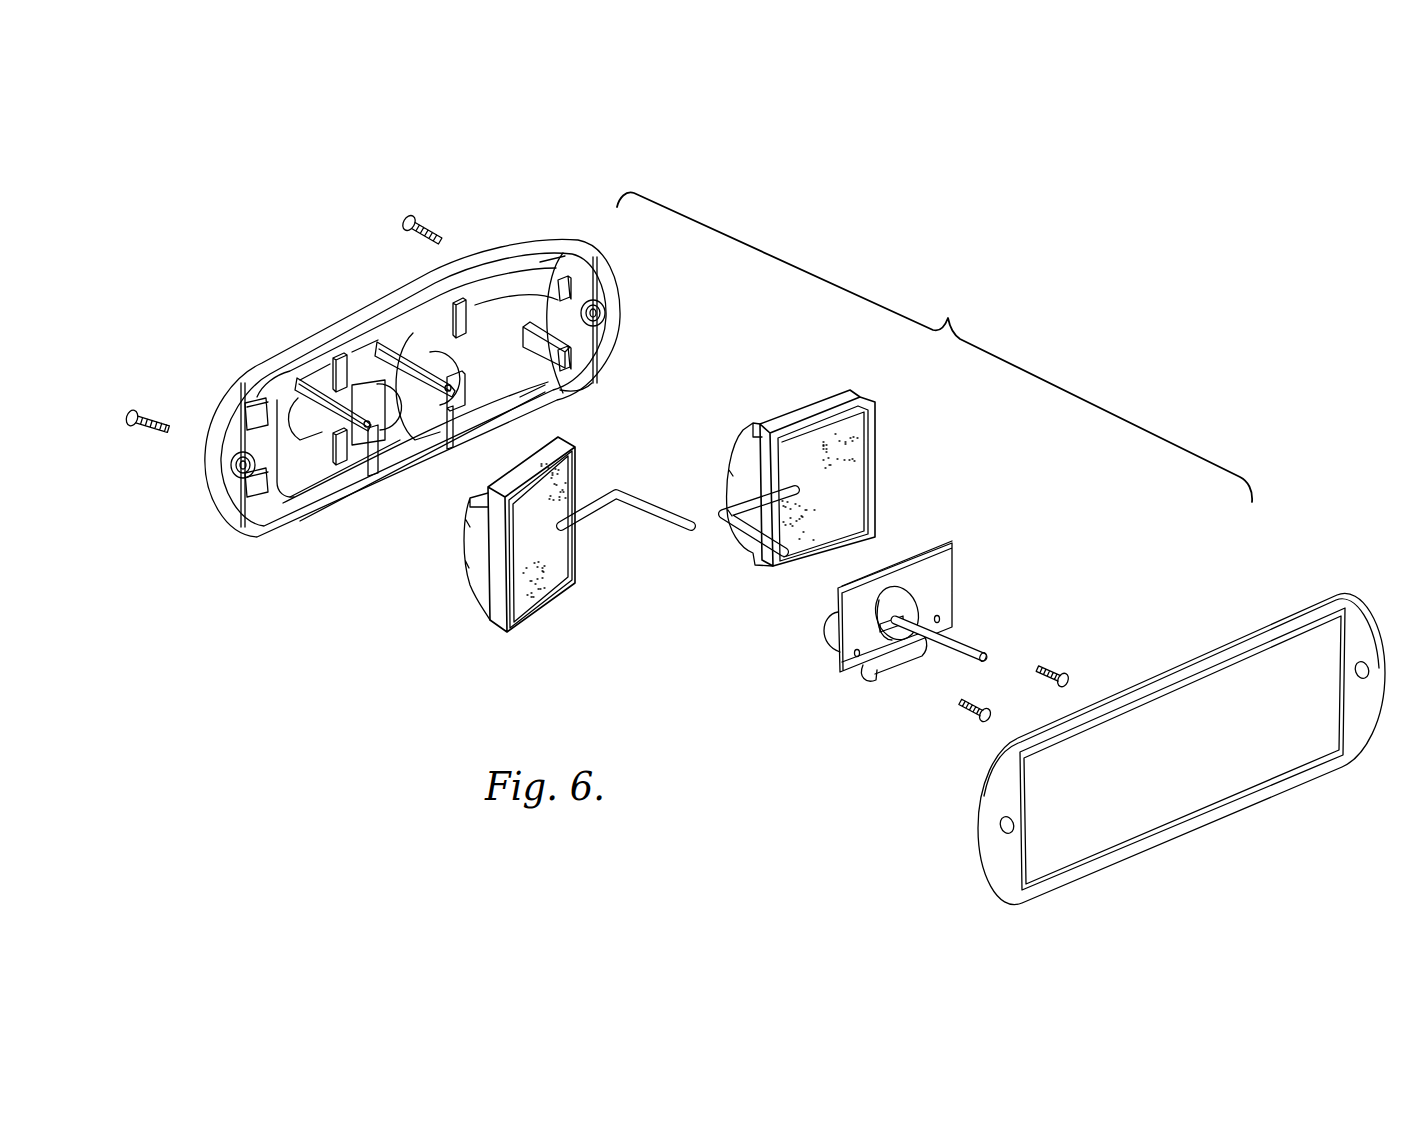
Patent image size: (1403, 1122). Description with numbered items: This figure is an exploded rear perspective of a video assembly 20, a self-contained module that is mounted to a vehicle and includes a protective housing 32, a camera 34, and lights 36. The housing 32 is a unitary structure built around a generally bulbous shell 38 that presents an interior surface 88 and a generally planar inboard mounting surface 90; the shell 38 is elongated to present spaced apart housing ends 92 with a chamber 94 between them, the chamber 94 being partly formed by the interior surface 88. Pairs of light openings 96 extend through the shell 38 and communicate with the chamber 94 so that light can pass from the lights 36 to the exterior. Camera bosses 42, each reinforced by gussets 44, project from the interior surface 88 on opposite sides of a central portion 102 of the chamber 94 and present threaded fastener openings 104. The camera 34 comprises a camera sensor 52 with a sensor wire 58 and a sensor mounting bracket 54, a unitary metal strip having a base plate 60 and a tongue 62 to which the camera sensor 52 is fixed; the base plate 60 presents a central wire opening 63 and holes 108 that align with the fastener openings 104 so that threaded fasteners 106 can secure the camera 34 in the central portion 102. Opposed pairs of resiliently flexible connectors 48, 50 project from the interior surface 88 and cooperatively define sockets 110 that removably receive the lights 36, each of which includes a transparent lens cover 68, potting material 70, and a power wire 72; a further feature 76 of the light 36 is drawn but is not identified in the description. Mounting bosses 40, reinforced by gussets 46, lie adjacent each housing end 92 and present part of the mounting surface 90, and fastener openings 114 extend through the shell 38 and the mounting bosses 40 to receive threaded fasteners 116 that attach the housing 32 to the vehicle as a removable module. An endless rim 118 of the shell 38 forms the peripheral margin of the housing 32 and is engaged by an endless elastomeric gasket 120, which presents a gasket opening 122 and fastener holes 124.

The video assembly 20 is at (1048, 290).
The protective housing 32 is at (266, 534).
The camera 34 is at (843, 640).
The lights 36 is at (505, 597).
The shell 38 is at (567, 390).
The mounting bosses 40 is at (233, 452).
The camera bosses 42 is at (337, 487).
The gussets 44 is at (413, 340).
The gussets 46 is at (235, 492).
The connector 48 is at (328, 363).
The connector 50 is at (257, 488).
The camera sensor 52 is at (830, 627).
The sensor mounting bracket 54 is at (940, 563).
The sensor wire 58 is at (973, 650).
The base plate 60 is at (937, 552).
The tongue 62 is at (867, 675).
The central wire opening 63 is at (903, 587).
The transparent lens cover 68 is at (492, 577).
The potting material 70 is at (523, 605).
The power wire 72 is at (670, 522).
The frame 76 is at (566, 590).
The interior surface 88 is at (277, 508).
The inboard mounting surface 90 is at (330, 510).
The housing ends 92 is at (683, 192).
The chamber 94 is at (530, 403).
The light openings 96 is at (511, 378).
The central portion 102 is at (363, 353).
The threaded fastener openings 104 is at (367, 430).
The threaded fasteners 106 is at (1058, 672).
The holes 108 is at (938, 617).
The socket 110 is at (313, 367).
The fastener openings 114 is at (240, 466).
The threaded fasteners 116 is at (133, 408).
The endless rim 118 is at (587, 385).
The endless gasket 120 is at (1245, 635).
The gasket opening 122 is at (1220, 805).
The fastener holes 124 is at (1358, 676).